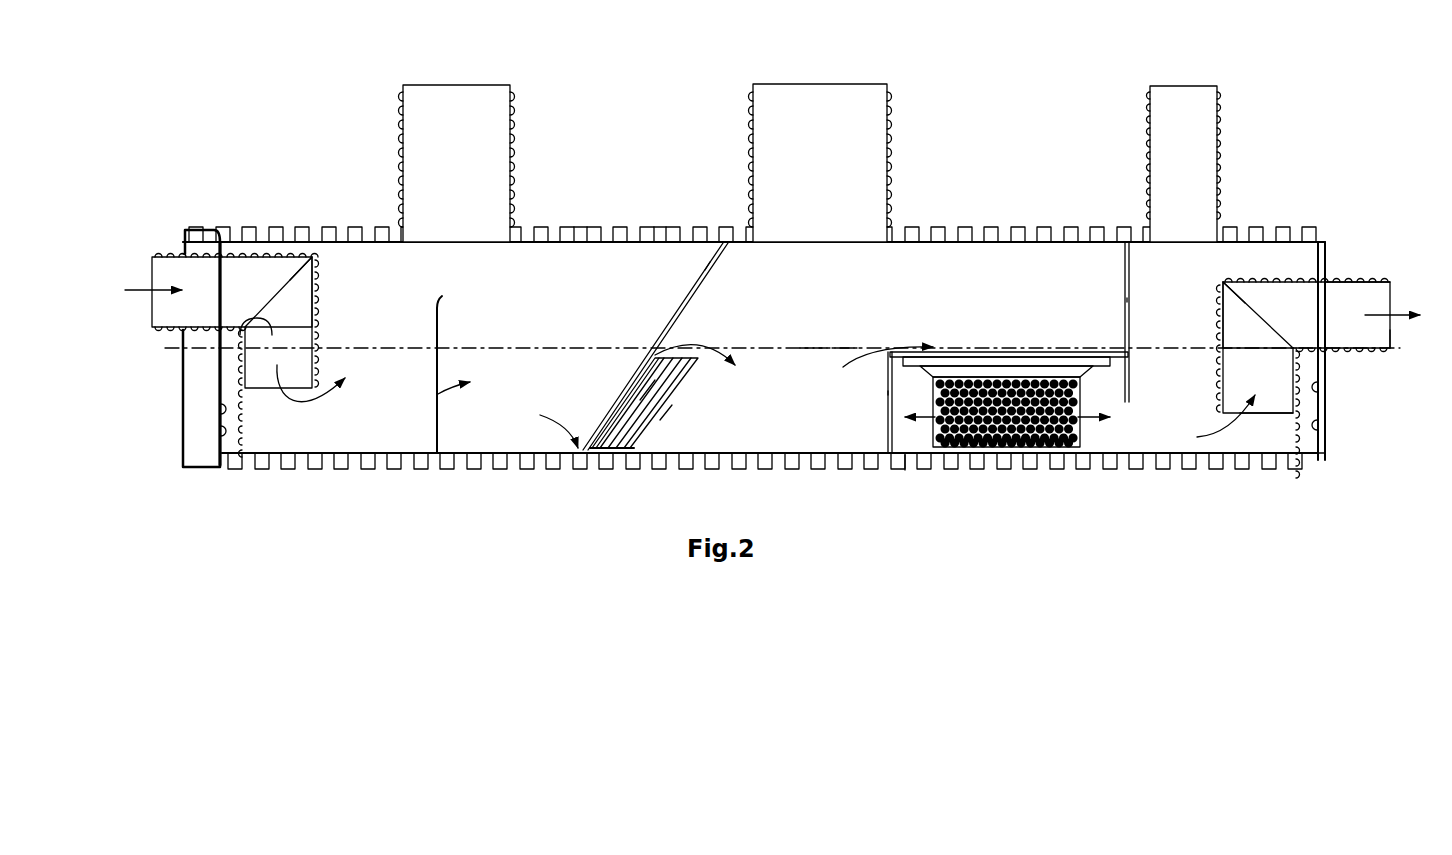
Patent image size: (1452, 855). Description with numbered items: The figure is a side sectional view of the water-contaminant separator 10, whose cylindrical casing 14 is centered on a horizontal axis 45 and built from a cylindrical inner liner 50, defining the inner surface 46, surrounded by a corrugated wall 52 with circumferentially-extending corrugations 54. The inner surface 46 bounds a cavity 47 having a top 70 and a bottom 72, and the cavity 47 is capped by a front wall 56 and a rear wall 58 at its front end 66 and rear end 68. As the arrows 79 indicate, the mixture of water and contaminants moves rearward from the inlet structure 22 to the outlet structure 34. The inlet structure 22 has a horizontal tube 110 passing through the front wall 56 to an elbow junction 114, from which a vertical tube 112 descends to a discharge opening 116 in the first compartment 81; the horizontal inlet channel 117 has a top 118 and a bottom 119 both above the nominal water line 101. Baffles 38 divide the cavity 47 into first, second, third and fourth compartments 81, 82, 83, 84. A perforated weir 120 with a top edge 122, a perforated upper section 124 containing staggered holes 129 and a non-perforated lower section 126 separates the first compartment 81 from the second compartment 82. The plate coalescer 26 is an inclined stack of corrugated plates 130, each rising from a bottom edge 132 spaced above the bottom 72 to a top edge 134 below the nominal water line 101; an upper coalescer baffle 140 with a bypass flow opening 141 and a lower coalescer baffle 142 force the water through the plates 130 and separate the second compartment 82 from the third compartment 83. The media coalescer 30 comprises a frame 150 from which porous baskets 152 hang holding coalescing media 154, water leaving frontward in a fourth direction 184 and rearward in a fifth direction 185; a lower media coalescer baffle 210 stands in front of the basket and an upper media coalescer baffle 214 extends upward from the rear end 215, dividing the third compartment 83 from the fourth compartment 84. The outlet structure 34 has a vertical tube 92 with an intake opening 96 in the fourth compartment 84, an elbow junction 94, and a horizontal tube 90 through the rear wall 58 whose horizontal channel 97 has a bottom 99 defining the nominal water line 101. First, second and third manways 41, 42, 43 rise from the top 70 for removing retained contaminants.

The water-contaminant separator 10 is at (1273, 118).
The cylindrical casing 14 is at (1060, 228).
The inlet structure 22 is at (172, 245).
The plate coalescer 26 is at (722, 330).
The media coalescer 30 is at (968, 340).
The outlet structure 34 is at (1365, 280).
The baffles 38 is at (437, 438).
The first manway 41 is at (475, 85).
The second manway 42 is at (840, 84).
The third manway 43 is at (1195, 88).
The horizontal axis 45 is at (815, 349).
The inner surface 46 is at (930, 252).
The cavity 47 is at (685, 255).
The cylindrical inner liner 50 is at (648, 246).
The corrugated wall 52 is at (655, 227).
The corrugations 54 is at (573, 227).
The front wall 56 is at (220, 410).
The rear wall 58 is at (1320, 387).
The front end 66 is at (220, 425).
The rear end 68 is at (1320, 425).
The top 70 is at (545, 246).
The bottom 72 is at (519, 452).
The arrows 79 is at (133, 291).
The first compartment 81 is at (297, 435).
The second compartment 82 is at (475, 429).
The third compartment 83 is at (785, 429).
The fourth compartment 84 is at (1198, 413).
The horizontal tube 90 is at (1338, 282).
The vertical tube 92 is at (1218, 320).
The elbow junction 94 is at (1225, 283).
The intake opening 96 is at (1272, 413).
The horizontal channel 97 is at (1306, 315).
The bottom 99 is at (1365, 348).
The nominal water line 101 is at (838, 349).
The horizontal tube 110 is at (263, 252).
The vertical tube 112 is at (318, 305).
The elbow junction 114 is at (312, 257).
The discharge opening 116 is at (265, 388).
The horizontal inlet channel 117 is at (235, 292).
The top 118 is at (165, 266).
The bottom 119 is at (165, 330).
The perforated weir 120 is at (437, 414).
The top edge 122 is at (447, 270).
The perforated upper section 124 is at (437, 345).
The non-perforated lower section 126 is at (437, 395).
The holes 129 is at (437, 380).
The corrugated plates 130 is at (640, 442).
The bottom edge 132 is at (613, 450).
The top edge 134 is at (627, 410).
The upper coalescer baffle 140 is at (680, 316).
The bypass flow opening 141 is at (722, 270).
The lower coalescer baffle 142 is at (680, 395).
The frame 150 is at (1012, 362).
The porous baskets 152 is at (945, 447).
The coalescing media 154 is at (1030, 420).
The fourth direction 184 is at (930, 437).
The fifth direction 185 is at (1085, 422).
The lower media coalescer baffle 210 is at (888, 422).
The upper media coalescer baffle 214 is at (1125, 330).
The rear end 215 is at (1125, 258).